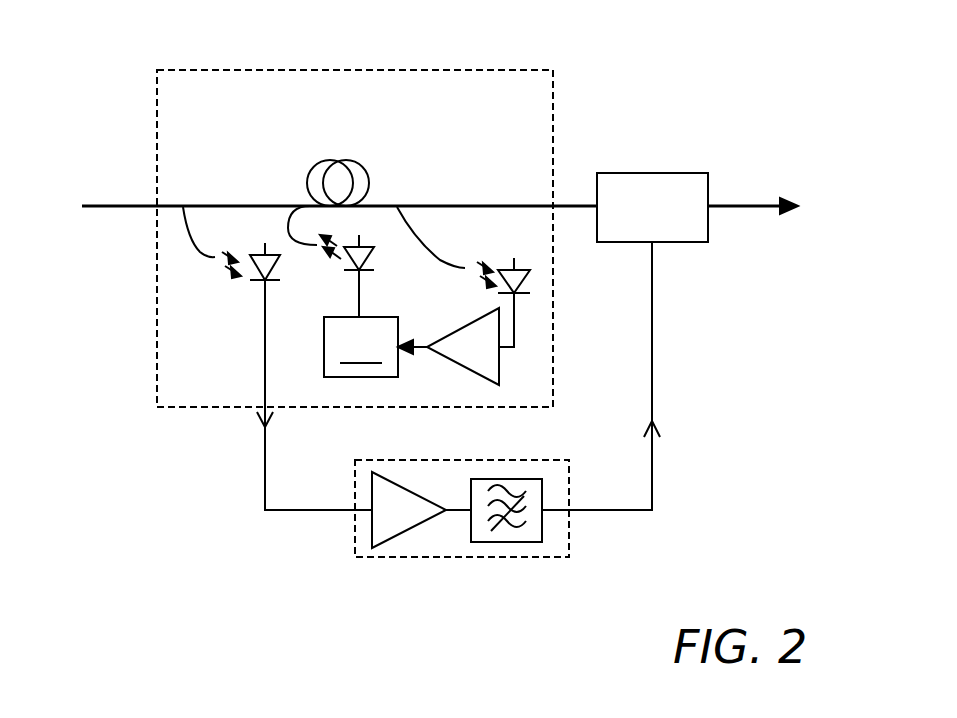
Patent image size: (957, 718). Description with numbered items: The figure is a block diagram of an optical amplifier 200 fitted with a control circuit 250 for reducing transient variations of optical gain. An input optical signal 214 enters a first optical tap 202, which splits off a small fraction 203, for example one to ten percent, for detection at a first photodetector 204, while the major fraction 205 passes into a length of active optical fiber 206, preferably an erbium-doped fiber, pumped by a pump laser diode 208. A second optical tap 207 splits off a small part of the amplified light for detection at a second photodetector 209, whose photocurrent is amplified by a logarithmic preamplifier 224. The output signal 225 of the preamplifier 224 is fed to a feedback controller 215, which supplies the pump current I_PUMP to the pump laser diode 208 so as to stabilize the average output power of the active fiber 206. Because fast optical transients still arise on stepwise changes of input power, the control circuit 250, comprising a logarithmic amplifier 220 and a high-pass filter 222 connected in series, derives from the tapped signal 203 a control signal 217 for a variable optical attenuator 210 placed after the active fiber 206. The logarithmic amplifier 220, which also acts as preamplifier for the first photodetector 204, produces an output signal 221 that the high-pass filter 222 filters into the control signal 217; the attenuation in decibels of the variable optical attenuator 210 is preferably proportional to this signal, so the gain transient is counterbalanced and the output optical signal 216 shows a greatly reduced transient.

The optical amplifier 200 is at (525, 54).
The first optical tap 202 is at (176, 216).
The small fraction of input optical signal 203 is at (192, 242).
The first photodetector 204 is at (258, 283).
The major fraction of input optical signal 205 is at (263, 206).
The active optical fiber 206 is at (333, 160).
The second optical tap 207 is at (391, 214).
The pump laser diode 208 is at (346, 256).
The second photodetector 209 is at (504, 264).
The variable optical attenuator 210 is at (667, 173).
The input optical signal 214 is at (106, 204).
The feedback controller 215 is at (367, 334).
The output optical signal 216 is at (750, 204).
The control signal 217 is at (655, 383).
The logarithmic amplifier 220 is at (397, 540).
The output signal of the logarithmic amplifier 221 is at (457, 508).
The high-pass filter 222 is at (522, 545).
The logarithmic preamplifier 224 is at (500, 362).
The output signal of the preamplifier 225 is at (423, 350).
The control circuit 250 is at (470, 558).